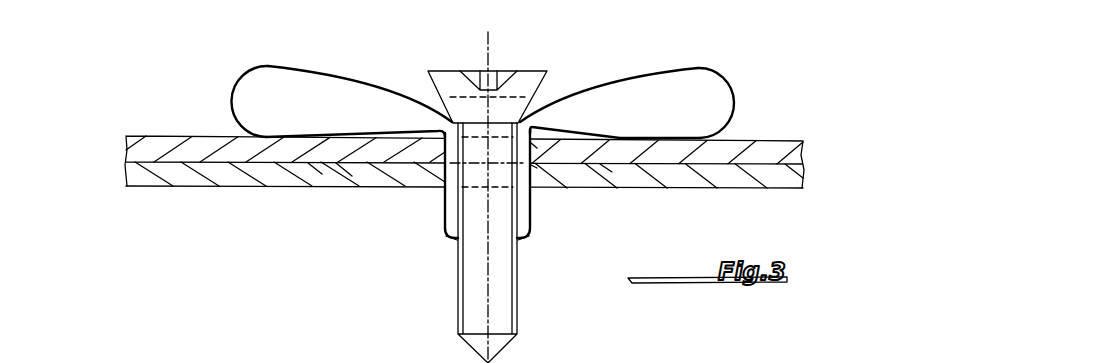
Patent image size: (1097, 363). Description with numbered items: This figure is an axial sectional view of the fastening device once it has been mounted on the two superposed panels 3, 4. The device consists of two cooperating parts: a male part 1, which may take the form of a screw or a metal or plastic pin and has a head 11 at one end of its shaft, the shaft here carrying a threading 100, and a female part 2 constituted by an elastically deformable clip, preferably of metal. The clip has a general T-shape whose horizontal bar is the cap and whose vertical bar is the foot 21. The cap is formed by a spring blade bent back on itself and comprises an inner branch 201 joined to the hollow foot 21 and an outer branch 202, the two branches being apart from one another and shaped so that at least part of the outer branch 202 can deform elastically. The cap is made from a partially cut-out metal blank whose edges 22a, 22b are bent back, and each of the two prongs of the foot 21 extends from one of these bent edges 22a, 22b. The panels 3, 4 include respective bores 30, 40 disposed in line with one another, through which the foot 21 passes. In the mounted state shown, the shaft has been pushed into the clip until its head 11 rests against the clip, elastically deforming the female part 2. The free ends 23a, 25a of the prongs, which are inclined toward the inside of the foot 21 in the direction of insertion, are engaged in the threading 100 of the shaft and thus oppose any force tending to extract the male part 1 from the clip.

The male part 1 is at (494, 194).
The head 11 is at (525, 80).
The threading 100 is at (472, 313).
The female part 2 is at (525, 73).
The inner branch 201 is at (302, 133).
The outer branch 202 is at (337, 73).
The foot 21 is at (481, 218).
The free end of prong 23a is at (450, 242).
The free end of prong 25a is at (518, 237).
The bore 30 is at (530, 143).
The bore 40 is at (531, 165).
The bent edge 22a is at (335, 163).
The bent edge 22b is at (615, 141).
The panel 3 is at (775, 152).
The panel 4 is at (757, 188).